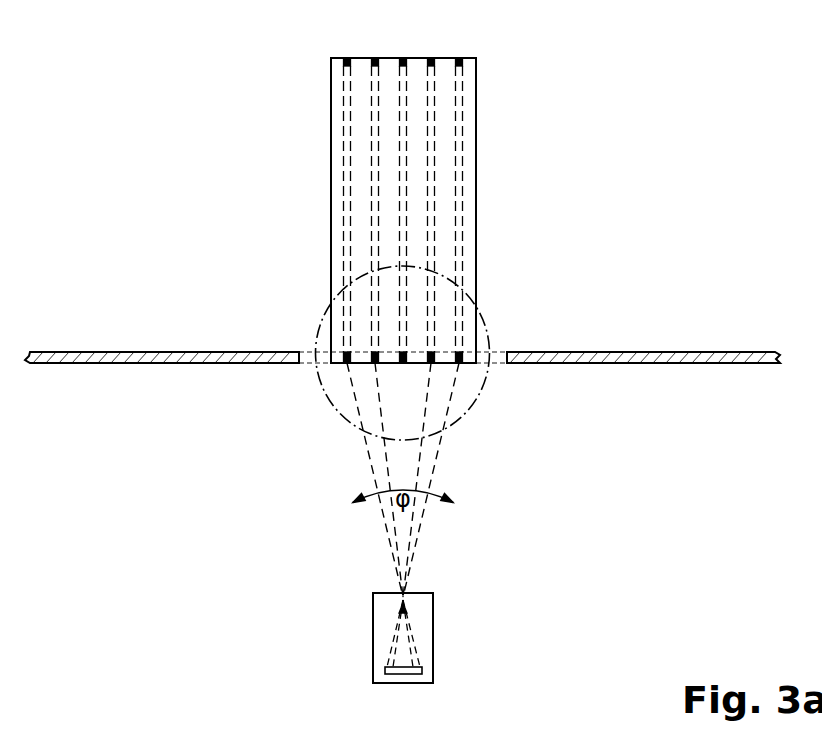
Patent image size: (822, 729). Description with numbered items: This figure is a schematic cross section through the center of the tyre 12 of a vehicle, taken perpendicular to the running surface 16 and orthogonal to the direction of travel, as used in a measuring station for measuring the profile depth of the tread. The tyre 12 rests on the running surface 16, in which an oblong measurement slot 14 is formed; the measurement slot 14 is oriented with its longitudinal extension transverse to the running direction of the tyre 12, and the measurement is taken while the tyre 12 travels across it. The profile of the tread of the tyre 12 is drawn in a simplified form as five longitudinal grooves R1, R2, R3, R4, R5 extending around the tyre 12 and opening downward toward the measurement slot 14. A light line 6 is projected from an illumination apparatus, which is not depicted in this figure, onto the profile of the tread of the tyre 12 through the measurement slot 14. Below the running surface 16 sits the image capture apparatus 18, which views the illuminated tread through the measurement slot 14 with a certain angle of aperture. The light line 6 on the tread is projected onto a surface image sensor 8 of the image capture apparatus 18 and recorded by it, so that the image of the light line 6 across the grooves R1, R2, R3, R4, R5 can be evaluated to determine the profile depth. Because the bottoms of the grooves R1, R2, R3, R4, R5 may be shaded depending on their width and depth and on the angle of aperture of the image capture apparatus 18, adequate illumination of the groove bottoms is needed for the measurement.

The tyre 12 is at (476, 198).
The longitudinal groove R1 is at (347, 58).
The longitudinal groove R2 is at (375, 58).
The longitudinal groove R3 is at (403, 58).
The longitudinal groove R4 is at (431, 58).
The longitudinal groove R5 is at (459, 58).
The running surface 16 is at (695, 352).
The measurement slot 14 is at (292, 376).
The light line 6 is at (381, 397).
The image capture apparatus 18 is at (373, 627).
The surface image sensor 8 is at (385, 670).